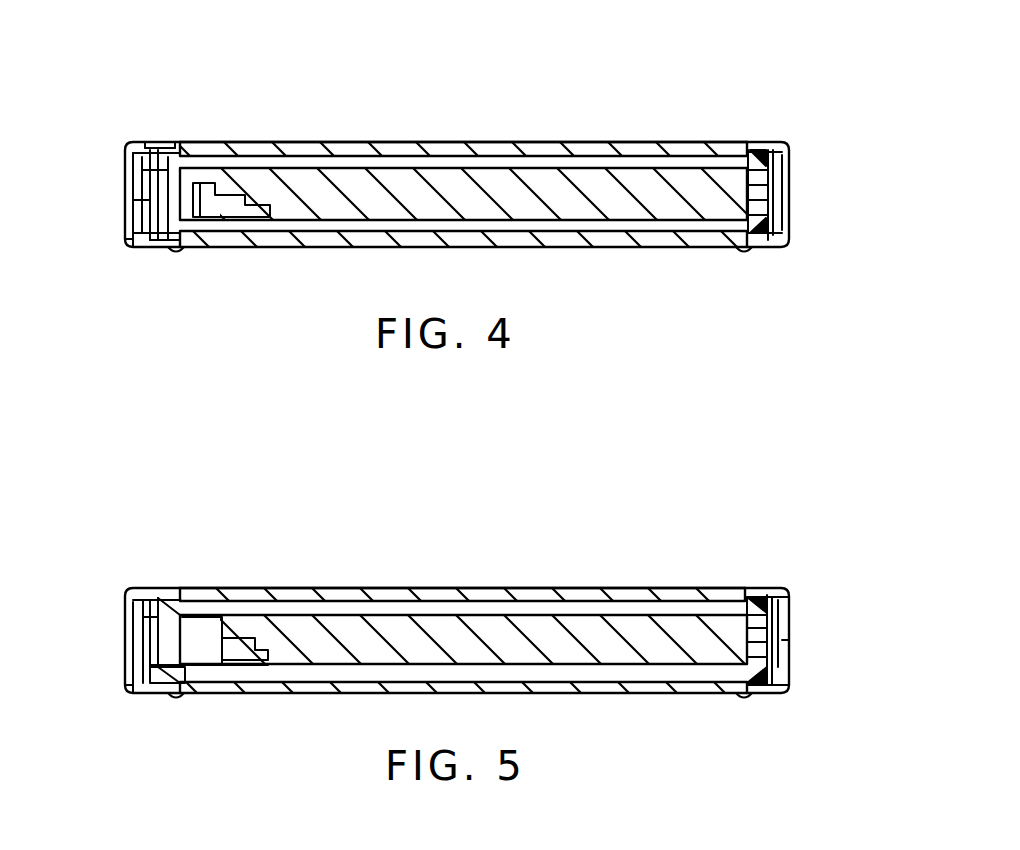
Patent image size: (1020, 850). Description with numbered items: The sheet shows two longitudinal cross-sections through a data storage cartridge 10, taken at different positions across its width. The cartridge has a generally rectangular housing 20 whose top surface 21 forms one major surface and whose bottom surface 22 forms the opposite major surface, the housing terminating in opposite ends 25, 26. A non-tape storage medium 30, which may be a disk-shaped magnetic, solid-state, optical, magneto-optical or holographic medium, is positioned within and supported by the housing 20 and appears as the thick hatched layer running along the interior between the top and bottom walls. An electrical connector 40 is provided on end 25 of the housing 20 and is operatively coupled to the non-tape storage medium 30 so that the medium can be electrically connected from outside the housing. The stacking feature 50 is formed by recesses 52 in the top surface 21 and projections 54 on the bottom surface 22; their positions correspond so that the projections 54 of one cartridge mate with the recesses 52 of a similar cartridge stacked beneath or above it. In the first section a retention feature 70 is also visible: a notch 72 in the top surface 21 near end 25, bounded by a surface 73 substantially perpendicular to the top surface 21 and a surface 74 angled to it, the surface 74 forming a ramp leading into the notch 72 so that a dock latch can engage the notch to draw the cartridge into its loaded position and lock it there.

In FIG. 4, the data storage cartridge 10 is at (772, 92).
In FIG. 5, the data storage cartridge 10 is at (798, 546).
In FIG. 4, the housing 20 is at (462, 135).
In FIG. 5, the housing 20 is at (462, 580).
In FIG. 4, the top surface 21 is at (352, 142).
In FIG. 5, the top surface 21 is at (326, 587).
In FIG. 4, the bottom surface 22 is at (330, 248).
In FIG. 5, the bottom surface 22 is at (312, 695).
In FIG. 4, the end 25 is at (125, 232).
In FIG. 5, the end 25 is at (120, 681).
In FIG. 4, the end 26 is at (790, 231).
In FIG. 5, the end 26 is at (790, 675).
In FIG. 4, the non-tape storage medium 30 is at (577, 160).
In FIG. 5, the non-tape storage medium 30 is at (540, 600).
In FIG. 4, the electrical connector 40 is at (100, 188).
In FIG. 5, the stacking feature 50 is at (226, 526).
In FIG. 5, the recesses 52 is at (178, 586).
In FIG. 4, the projections 54 is at (178, 251).
In FIG. 5, the projections 54 is at (178, 698).
In FIG. 4, the retention feature 70 is at (186, 72).
In FIG. 4, the notch 72 is at (158, 141).
In FIG. 4, the surface 73 is at (150, 141).
In FIG. 4, the surface 74 is at (166, 141).